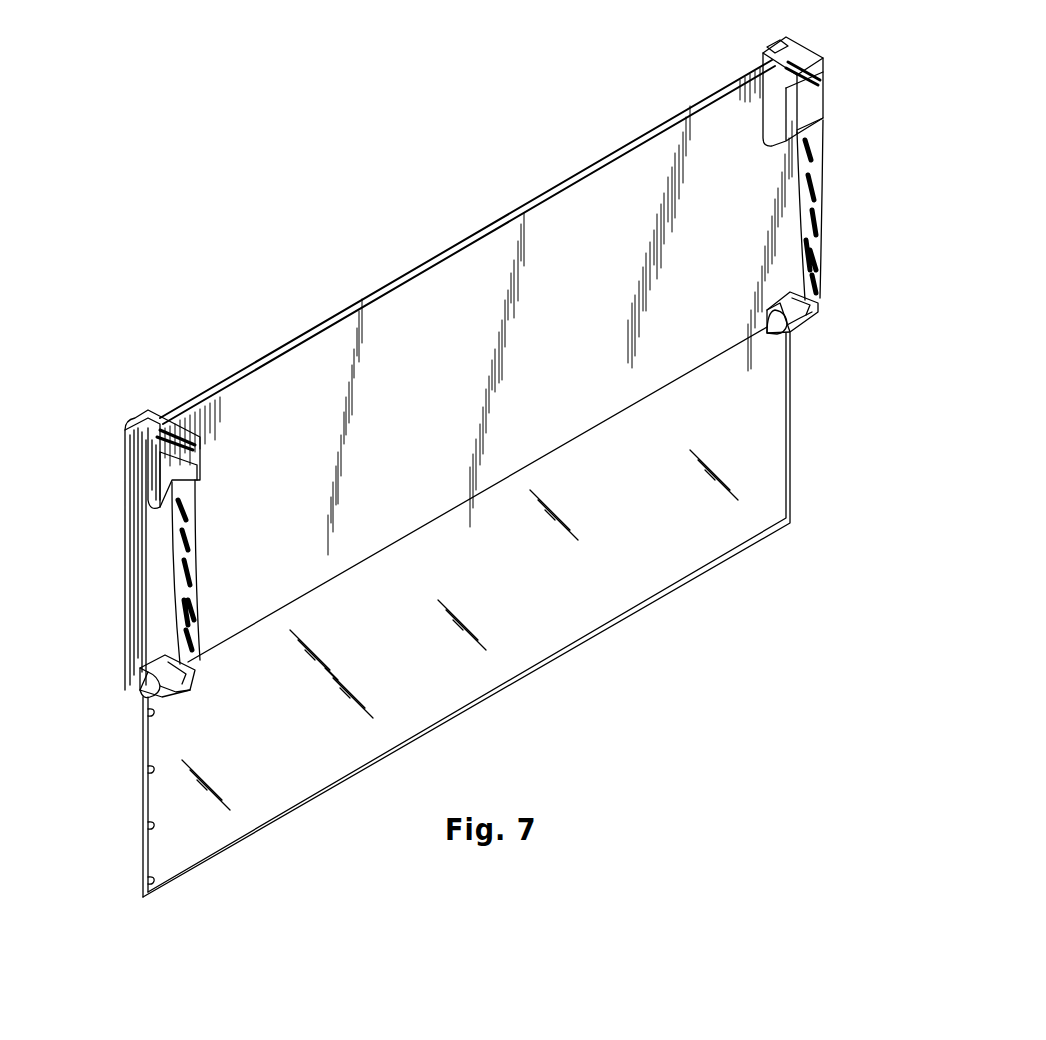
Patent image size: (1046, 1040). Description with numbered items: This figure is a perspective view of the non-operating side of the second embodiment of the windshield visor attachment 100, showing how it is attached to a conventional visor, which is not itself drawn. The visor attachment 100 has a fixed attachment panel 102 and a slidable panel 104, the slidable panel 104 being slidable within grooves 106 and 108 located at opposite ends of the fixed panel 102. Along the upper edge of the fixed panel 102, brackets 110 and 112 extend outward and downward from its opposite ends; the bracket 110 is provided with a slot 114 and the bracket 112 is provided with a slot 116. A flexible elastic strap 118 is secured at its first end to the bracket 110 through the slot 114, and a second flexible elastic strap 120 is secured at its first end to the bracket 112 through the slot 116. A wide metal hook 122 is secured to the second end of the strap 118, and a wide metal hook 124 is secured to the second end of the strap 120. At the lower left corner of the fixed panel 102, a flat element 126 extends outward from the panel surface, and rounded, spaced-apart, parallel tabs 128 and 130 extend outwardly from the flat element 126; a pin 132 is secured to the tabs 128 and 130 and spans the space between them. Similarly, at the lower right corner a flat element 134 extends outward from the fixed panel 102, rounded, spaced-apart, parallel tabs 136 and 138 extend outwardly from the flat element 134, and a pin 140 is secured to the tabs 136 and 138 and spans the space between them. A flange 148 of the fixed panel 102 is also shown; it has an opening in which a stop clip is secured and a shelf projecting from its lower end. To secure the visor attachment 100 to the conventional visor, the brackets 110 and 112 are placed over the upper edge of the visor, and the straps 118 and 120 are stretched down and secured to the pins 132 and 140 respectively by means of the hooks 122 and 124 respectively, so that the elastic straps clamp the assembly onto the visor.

The visor attachment 100 is at (106, 523).
The fixed attachment panel 102 is at (460, 250).
The slidable panel 104 is at (655, 584).
The groove 106 is at (775, 50).
The groove 108 is at (150, 410).
The bracket 110 is at (810, 50).
The bracket 112 is at (185, 420).
The slot 114 is at (822, 106).
The slot 116 is at (197, 470).
The flexible elastic strap 118 is at (828, 162).
The flexible elastic strap 120 is at (200, 578).
The wide metal hook 122 is at (808, 318).
The wide metal hook 124 is at (190, 684).
The flat element 126 is at (145, 668).
The tab 128 is at (140, 705).
The tab 130 is at (196, 668).
The pin 132 is at (178, 690).
The flat element 134 is at (778, 310).
The tab 136 is at (775, 337).
The tab 138 is at (818, 308).
The pin 140 is at (790, 325).
The flange 148 is at (133, 415).